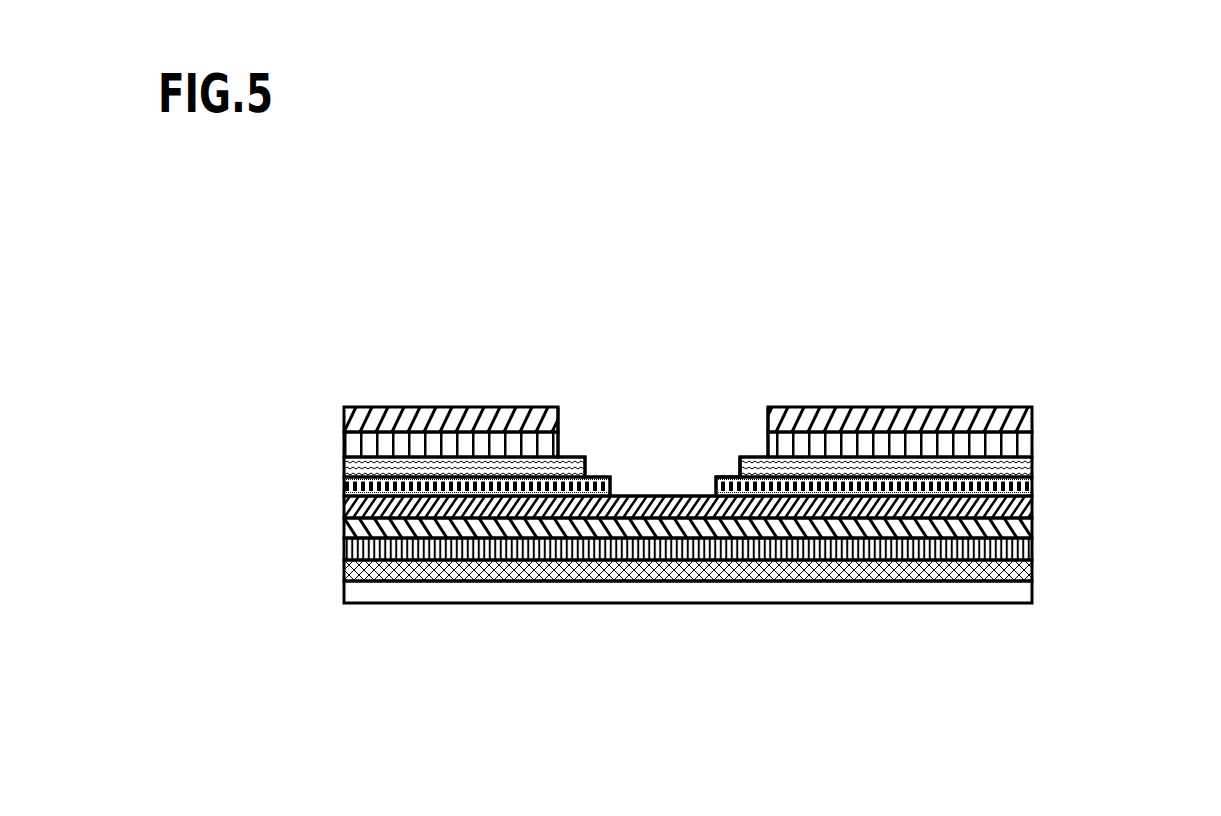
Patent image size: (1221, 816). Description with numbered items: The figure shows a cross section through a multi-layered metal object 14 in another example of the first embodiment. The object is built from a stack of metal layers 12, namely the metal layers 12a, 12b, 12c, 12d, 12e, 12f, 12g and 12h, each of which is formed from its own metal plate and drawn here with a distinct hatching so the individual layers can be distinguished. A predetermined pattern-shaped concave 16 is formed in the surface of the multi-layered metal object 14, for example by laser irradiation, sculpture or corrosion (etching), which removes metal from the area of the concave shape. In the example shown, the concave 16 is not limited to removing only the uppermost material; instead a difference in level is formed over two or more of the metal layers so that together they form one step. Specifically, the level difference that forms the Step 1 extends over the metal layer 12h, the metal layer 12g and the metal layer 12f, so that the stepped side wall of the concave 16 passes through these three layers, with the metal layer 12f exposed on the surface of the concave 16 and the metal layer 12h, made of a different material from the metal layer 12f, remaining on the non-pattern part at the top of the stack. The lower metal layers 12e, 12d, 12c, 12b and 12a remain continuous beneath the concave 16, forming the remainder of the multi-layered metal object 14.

The metal layer 12 is at (781, 487).
The metal layer 12a is at (732, 587).
The metal layer 12b is at (1032, 553).
The metal layer 12c is at (1032, 530).
The metal layer 12d is at (1032, 503).
The metal layer 12e is at (1032, 485).
The metal layer 12f is at (1032, 460).
The metal layer 12g is at (1032, 438).
The metal layer 12h is at (1032, 420).
The multi-layered metal object 14 is at (958, 640).
The concave 16 is at (645, 408).
The step Step 1 is at (748, 462).